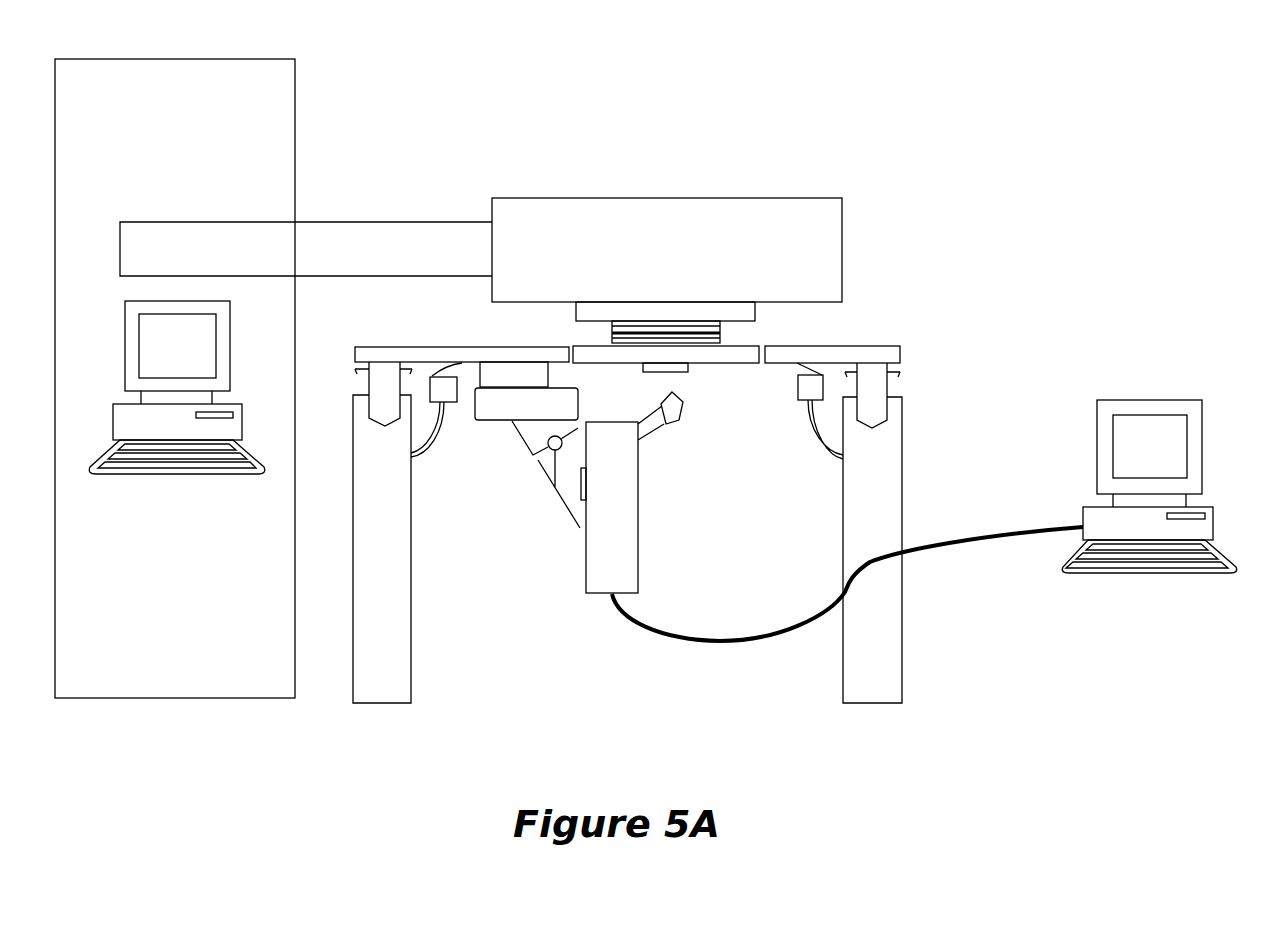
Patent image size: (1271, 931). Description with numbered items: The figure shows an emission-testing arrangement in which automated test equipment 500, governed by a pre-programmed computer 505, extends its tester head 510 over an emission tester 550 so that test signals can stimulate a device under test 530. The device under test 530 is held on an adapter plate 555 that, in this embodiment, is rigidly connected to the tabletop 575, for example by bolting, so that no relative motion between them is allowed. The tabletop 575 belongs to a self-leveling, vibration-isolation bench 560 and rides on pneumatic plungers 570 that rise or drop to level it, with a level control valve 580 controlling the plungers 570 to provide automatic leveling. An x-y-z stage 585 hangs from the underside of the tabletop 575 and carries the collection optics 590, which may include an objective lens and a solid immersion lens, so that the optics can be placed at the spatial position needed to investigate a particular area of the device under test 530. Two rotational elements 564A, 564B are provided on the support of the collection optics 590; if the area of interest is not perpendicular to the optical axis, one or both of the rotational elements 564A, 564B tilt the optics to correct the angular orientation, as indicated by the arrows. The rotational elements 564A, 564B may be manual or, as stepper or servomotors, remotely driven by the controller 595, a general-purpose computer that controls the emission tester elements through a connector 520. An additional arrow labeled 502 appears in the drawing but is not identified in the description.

The automated test equipment (ATE) 500 is at (202, 146).
The pre-programmed computer (controller) 505 is at (205, 361).
The tester head 510 is at (685, 266).
The emission tester 550 is at (949, 276).
The adapter plate 555 is at (746, 345).
The self-leveling vibration-isolation bench 560 is at (933, 328).
The tabletop 575 is at (436, 345).
The plunger 570 is at (883, 387).
The level control valve 580 is at (451, 403).
The x-y-z stage 585 is at (526, 392).
The rotational element 564A is at (549, 488).
The rotational element 564B is at (582, 522).
The collection optics 590 is at (675, 426).
The device under test (DUT) 530 is at (688, 376).
The chamber area 502 is at (763, 384).
The connector 520 is at (927, 537).
The controller 595 is at (1149, 486).